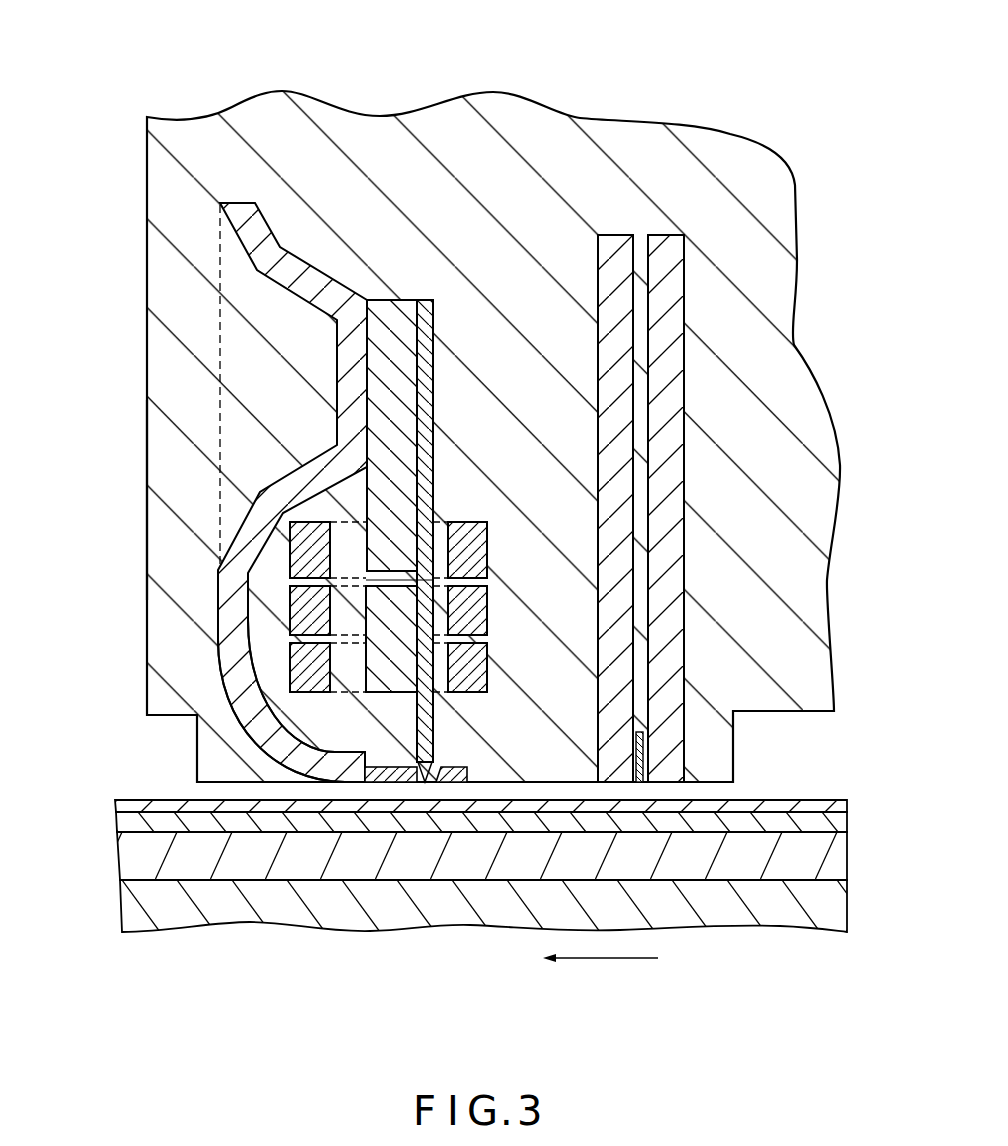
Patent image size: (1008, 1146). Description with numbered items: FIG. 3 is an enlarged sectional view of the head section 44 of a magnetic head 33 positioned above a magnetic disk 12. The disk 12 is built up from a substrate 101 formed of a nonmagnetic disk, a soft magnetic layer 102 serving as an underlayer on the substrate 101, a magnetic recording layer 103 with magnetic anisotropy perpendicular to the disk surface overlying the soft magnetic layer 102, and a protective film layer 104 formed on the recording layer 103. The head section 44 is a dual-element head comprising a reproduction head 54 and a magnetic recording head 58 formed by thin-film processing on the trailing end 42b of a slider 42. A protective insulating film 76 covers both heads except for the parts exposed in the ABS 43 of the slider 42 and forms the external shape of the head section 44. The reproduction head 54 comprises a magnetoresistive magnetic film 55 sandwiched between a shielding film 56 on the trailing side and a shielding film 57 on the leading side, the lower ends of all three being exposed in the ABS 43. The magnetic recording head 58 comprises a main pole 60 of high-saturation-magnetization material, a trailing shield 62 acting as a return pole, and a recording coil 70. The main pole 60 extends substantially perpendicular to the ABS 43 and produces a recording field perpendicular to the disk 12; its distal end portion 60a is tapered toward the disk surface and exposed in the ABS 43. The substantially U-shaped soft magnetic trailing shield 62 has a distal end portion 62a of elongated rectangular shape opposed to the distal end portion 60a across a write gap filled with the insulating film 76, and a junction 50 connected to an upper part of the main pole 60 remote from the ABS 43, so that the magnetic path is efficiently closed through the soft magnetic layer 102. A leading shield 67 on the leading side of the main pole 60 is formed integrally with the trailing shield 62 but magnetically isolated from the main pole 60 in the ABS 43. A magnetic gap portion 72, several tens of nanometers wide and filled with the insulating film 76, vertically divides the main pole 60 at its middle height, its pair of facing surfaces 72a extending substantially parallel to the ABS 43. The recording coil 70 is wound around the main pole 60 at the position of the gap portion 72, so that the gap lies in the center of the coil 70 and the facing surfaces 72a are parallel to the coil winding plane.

The magnetic disk 12 is at (444, 899).
The magnetic head 33 is at (461, 521).
The slider 42 is at (473, 420).
The trailing end 42b is at (148, 487).
The ABS 43 is at (712, 786).
The head section 44 is at (522, 138).
The junction 50 is at (343, 373).
The reproduction head 54 is at (689, 479).
The magnetic film 55 is at (641, 745).
The shielding film 56 is at (688, 512).
The shielding film 57 is at (628, 449).
The magnetic recording head 58 is at (318, 501).
The main pole 60 is at (430, 427).
The distal end portion 60a is at (423, 784).
The trailing shield 62 is at (228, 615).
The distal end portion 62a is at (340, 784).
The leading shield 67 is at (456, 786).
The recording coil 70 is at (488, 548).
The magnetic gap portion 72 is at (468, 584).
The facing surfaces 72a is at (385, 580).
The protective insulating film 76 is at (155, 208).
The substrate 101 is at (120, 900).
The soft magnetic layer 102 is at (117, 850).
The magnetic recording layer 103 is at (117, 815).
The protective film layer 104 is at (117, 800).